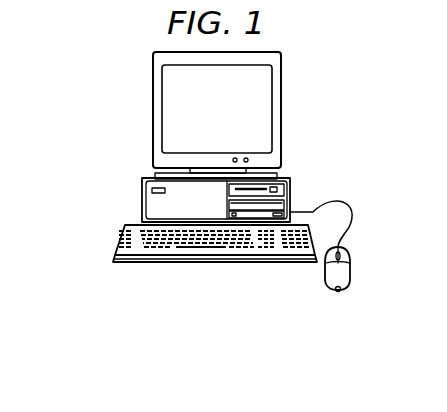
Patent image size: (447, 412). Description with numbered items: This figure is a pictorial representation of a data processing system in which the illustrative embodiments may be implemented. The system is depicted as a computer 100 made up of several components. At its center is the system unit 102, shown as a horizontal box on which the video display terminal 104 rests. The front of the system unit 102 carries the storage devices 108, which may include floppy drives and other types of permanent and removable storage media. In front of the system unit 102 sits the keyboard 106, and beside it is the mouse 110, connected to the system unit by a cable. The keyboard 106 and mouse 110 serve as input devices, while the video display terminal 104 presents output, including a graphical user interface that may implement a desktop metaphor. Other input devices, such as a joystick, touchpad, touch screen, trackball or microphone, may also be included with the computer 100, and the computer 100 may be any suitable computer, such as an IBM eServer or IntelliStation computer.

The computer 100 is at (96, 98).
The system unit 102 is at (142, 196).
The video display terminal 104 is at (282, 112).
The keyboard 106 is at (132, 262).
The storage devices 108 is at (292, 193).
The mouse 110 is at (338, 292).